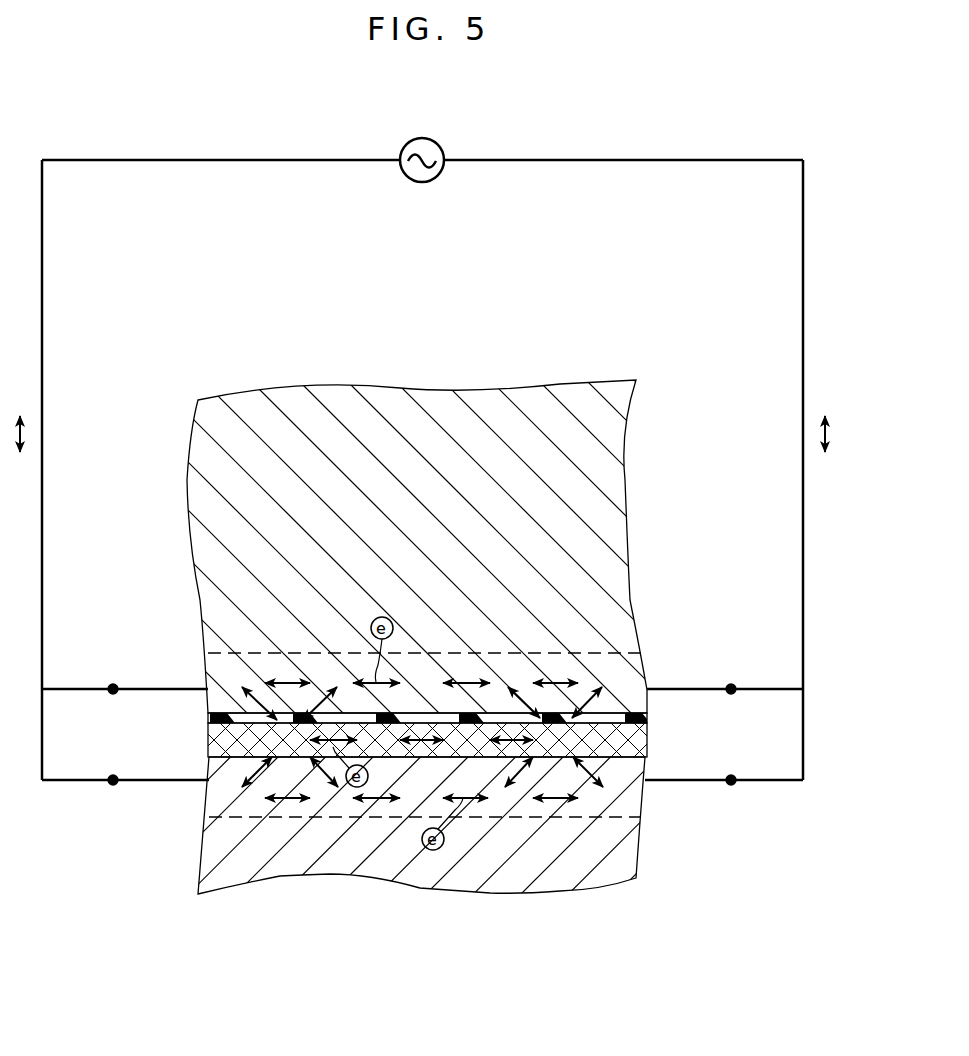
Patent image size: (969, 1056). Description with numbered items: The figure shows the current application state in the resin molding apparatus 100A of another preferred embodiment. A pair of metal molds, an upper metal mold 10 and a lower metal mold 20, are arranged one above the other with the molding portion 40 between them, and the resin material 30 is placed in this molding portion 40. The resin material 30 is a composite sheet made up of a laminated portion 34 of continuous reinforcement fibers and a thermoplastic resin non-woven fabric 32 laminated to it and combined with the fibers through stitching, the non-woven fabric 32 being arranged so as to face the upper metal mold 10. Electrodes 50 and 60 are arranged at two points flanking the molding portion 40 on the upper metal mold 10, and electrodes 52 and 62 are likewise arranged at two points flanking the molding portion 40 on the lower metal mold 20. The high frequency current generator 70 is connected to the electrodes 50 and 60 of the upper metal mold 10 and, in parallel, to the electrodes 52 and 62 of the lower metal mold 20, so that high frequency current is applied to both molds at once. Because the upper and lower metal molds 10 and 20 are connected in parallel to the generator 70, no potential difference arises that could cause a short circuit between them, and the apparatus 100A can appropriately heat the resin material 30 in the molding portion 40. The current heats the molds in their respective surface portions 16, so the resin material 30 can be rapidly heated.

The resin molding apparatus 100A is at (802, 96).
The upper metal mold 10 is at (202, 540).
The lower metal mold 20 is at (210, 838).
The surface portion 16 is at (193, 715).
The resin material 30 is at (381, 733).
The thermoplastic resin non-woven fabric 32 is at (208, 718).
The laminated portion of the continuous reinforcement fibers 34 is at (208, 740).
The molding portion 40 is at (427, 685).
The electrode 50 is at (112, 694).
The electrode 52 is at (112, 785).
The electrode 60 is at (734, 695).
The electrode 62 is at (734, 786).
The high frequency current generator 70 is at (440, 148).